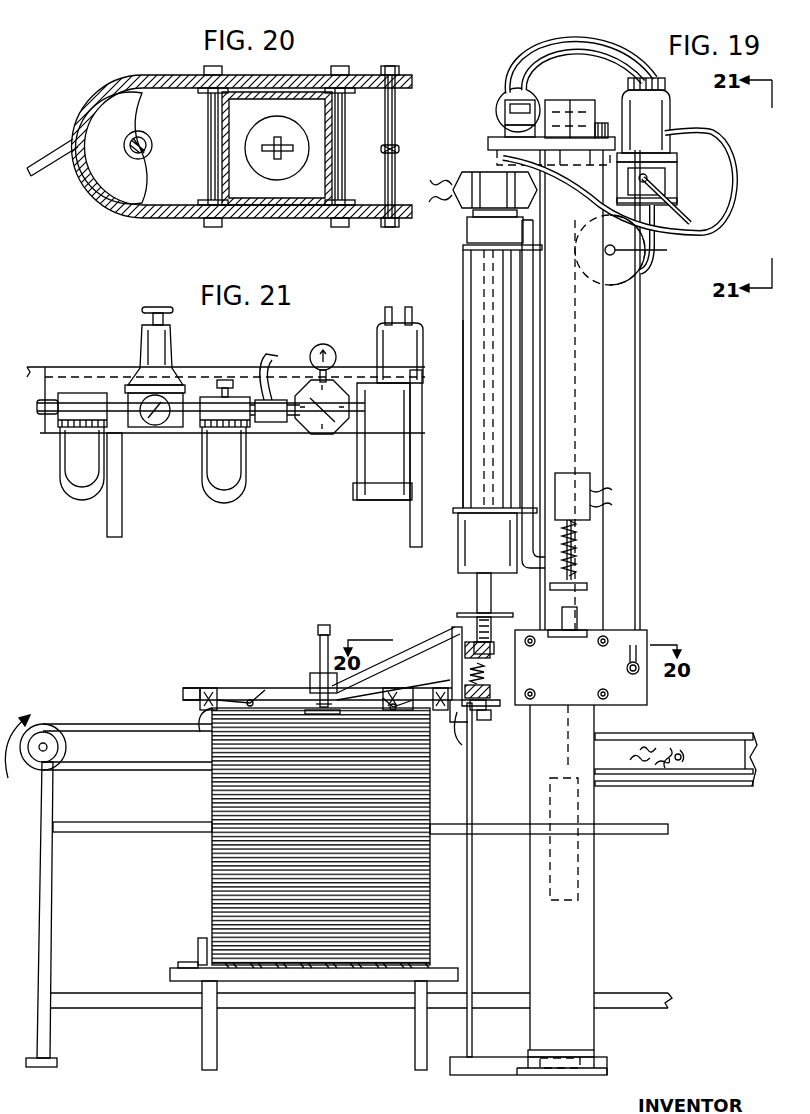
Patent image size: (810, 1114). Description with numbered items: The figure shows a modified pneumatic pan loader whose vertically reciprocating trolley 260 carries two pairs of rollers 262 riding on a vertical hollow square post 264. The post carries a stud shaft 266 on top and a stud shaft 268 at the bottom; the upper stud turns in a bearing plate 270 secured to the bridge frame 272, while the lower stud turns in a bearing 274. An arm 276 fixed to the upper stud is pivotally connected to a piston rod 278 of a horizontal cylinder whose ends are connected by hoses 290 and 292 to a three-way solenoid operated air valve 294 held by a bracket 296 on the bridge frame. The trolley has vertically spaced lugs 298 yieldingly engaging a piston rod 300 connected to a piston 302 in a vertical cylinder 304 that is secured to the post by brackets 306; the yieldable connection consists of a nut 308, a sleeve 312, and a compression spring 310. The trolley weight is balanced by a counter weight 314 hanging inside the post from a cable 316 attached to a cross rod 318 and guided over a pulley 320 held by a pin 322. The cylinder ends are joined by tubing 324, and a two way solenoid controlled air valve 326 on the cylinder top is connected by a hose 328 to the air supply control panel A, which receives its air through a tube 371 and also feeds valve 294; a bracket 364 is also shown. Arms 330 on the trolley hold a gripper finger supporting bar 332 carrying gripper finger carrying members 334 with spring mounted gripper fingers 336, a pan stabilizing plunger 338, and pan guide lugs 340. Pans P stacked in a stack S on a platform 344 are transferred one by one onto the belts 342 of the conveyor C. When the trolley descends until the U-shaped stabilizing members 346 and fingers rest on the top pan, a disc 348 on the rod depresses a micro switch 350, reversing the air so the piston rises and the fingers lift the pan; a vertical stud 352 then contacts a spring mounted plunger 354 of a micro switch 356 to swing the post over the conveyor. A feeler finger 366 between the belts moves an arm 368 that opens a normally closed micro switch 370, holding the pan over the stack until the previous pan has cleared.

In FIG. 20, the trolley 260 is at (270, 75).
In FIG. 19, the trolley 260 is at (625, 640).
In FIG. 20, the rollers 262 is at (207, 92).
In FIG. 20, the vertical hollow square post 264 is at (325, 120).
In FIG. 19, the vertical hollow square post 264 is at (593, 360).
In FIG. 19, the stud shaft 266 is at (590, 120).
In FIG. 19, the stud shaft 268 is at (548, 1068).
In FIG. 19, the bearing plate 270 is at (574, 165).
In FIG. 21, the bridge frame 272 is at (30, 367).
In FIG. 19, the bridge frame 272 is at (488, 143).
In FIG. 19, the bearing 274 is at (585, 1065).
In FIG. 19, the arm 276 is at (568, 86).
In FIG. 19, the piston rod 278 is at (530, 100).
In FIG. 21, the hose 290 is at (385, 318).
In FIG. 19, the hose 290 is at (526, 65).
In FIG. 21, the hose 292 is at (405, 310).
In FIG. 19, the hose 292 is at (652, 70).
In FIG. 21, the three-way solenoid operated air valve 294 is at (377, 336).
In FIG. 19, the three-way solenoid operated air valve 294 is at (671, 108).
In FIG. 21, the bracket 296 is at (275, 436).
In FIG. 20, the lugs 298 is at (123, 95).
In FIG. 19, the lugs 298 is at (492, 650).
In FIG. 20, the piston rod 300 is at (153, 144).
In FIG. 19, the piston rod 300 is at (476, 590).
In FIG. 19, the piston 302 is at (472, 296).
In FIG. 19, the vertical cylinder 304 is at (466, 462).
In FIG. 19, the brackets 306 is at (464, 248).
In FIG. 19, the nut 308 is at (500, 708).
In FIG. 19, the compression spring 310 is at (490, 672).
In FIG. 20, the sleeve 312 is at (140, 160).
In FIG. 19, the sleeve 312 is at (492, 630).
In FIG. 20, the counter weight 314 is at (268, 122).
In FIG. 19, the counter weight 314 is at (578, 886).
In FIG. 20, the cable 316 is at (283, 160).
In FIG. 19, the cable 316 is at (641, 440).
In FIG. 20, the cross rod 318 is at (384, 145).
In FIG. 19, the cross rod 318 is at (638, 673).
In FIG. 19, the pulley 320 is at (630, 272).
In FIG. 19, the pin 322 is at (650, 256).
In FIG. 19, the tubing 324 is at (535, 415).
In FIG. 19, the two way solenoid controlled air valve 326 is at (478, 163).
In FIG. 21, the hose 328 is at (280, 344).
In FIG. 19, the hose 328 is at (740, 212).
In FIG. 19, the arms 330 is at (360, 673).
In FIG. 19, the gripper finger supporting bar 332 is at (268, 688).
In FIG. 19, the gripper finger carrying members 334 is at (226, 672).
In FIG. 19, the gripper fingers 336 is at (250, 700).
In FIG. 19, the pan stabilizing plunger 338 is at (318, 640).
In FIG. 19, the pan guide lugs 340 is at (452, 712).
In FIG. 19, the belts 342 is at (172, 724).
In FIG. 19, the platform 344 is at (297, 981).
In FIG. 19, the U-shaped stabilizing members 346 is at (462, 745).
In FIG. 19, the disc 348 is at (494, 642).
In FIG. 19, the micro switch 350 is at (457, 614).
In FIG. 19, the vertical stud 352 is at (578, 612).
In FIG. 19, the spring mounted plunger 354 is at (590, 585).
In FIG. 19, the micro switch 356 is at (590, 482).
In FIG. 19, the bracket 364 is at (505, 130).
In FIG. 19, the feeler finger 366 is at (670, 745).
In FIG. 19, the arm 368 is at (665, 770).
In FIG. 19, the micro switch 370 is at (655, 768).
In FIG. 21, the tube 371 is at (38, 412).
In FIG. 19, the tube 371 is at (672, 205).
In FIG. 21, the air supply control panel A is at (205, 366).
In FIG. 19, the air supply control panel A is at (678, 119).
In FIG. 19, the conveyor C is at (86, 712).
In FIG. 19, the pan P is at (303, 700).
In FIG. 19, the stack S is at (198, 886).